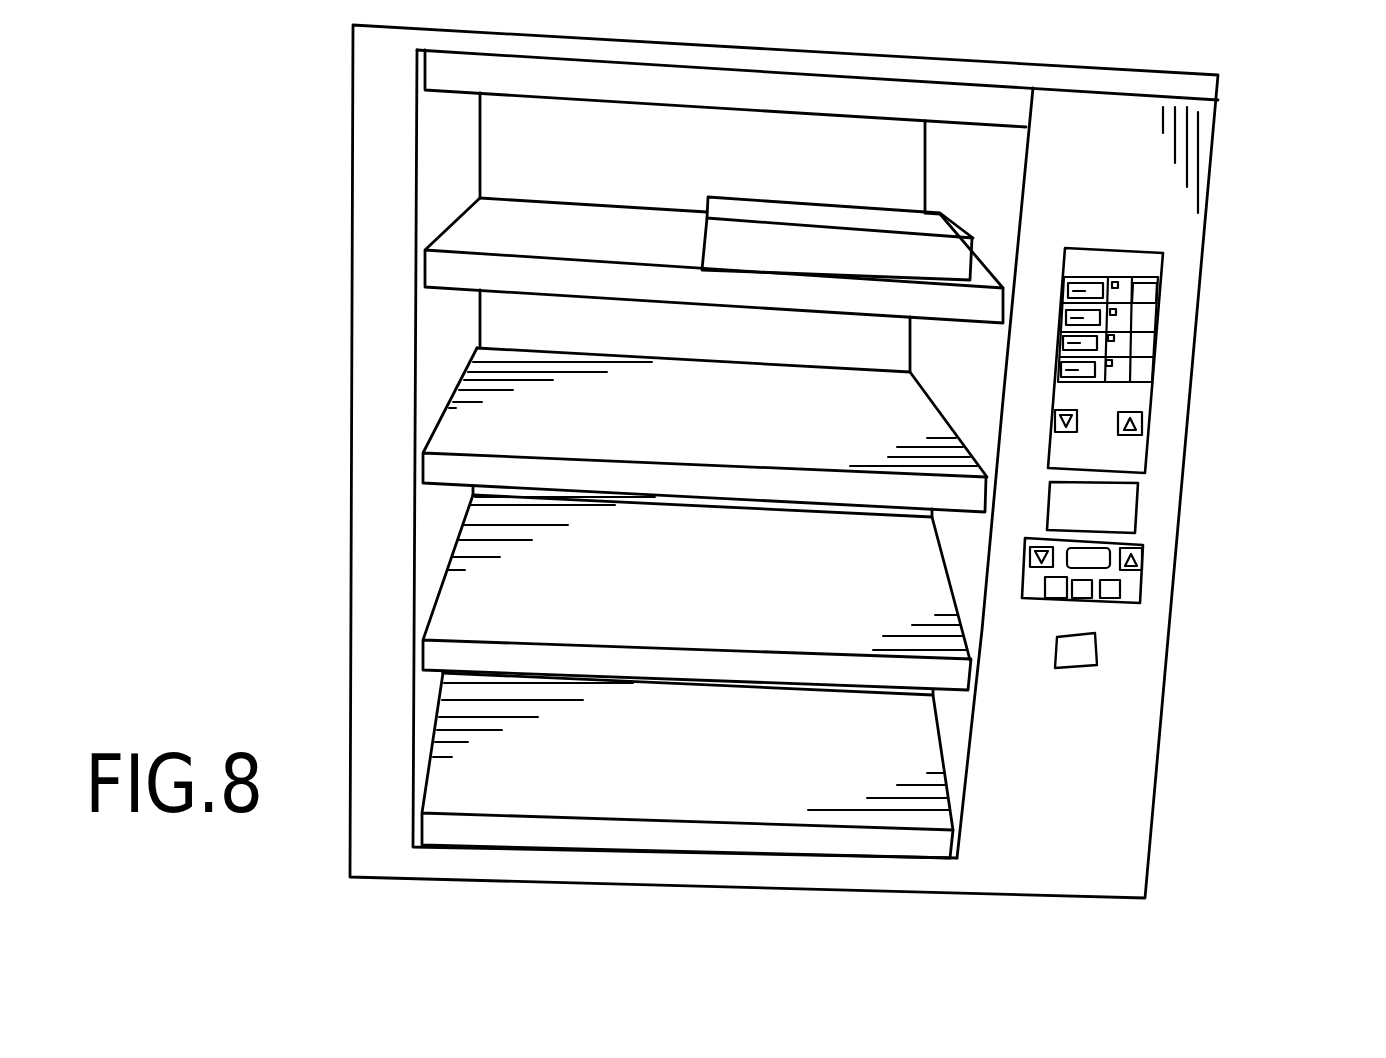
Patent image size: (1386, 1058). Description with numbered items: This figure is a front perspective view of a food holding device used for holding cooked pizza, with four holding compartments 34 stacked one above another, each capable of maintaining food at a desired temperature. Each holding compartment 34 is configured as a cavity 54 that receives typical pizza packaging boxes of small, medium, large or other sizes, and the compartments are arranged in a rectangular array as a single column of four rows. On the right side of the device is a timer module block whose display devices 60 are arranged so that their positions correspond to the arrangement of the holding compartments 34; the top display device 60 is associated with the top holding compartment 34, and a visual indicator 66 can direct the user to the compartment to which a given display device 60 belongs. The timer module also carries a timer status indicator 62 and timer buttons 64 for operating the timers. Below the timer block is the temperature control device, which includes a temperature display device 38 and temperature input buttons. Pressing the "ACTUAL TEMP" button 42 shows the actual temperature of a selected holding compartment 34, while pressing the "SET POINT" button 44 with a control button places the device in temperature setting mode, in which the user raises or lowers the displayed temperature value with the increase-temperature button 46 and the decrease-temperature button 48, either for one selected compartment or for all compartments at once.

The holding compartment 34 is at (366, 750).
The cavity 54 is at (503, 150).
The display device 60 is at (1087, 292).
The timer status indicator 62 is at (1115, 278).
The timer button 64 is at (1125, 297).
The visual indicator 66 is at (1155, 300).
The temperature display device 38 is at (1063, 557).
The "ACTUAL TEMP" button 42 is at (1043, 547).
The "SET POINT" button 44 is at (1140, 552).
The increase-temperature button 46 is at (1058, 588).
The decrease-temperature button 48 is at (1115, 588).